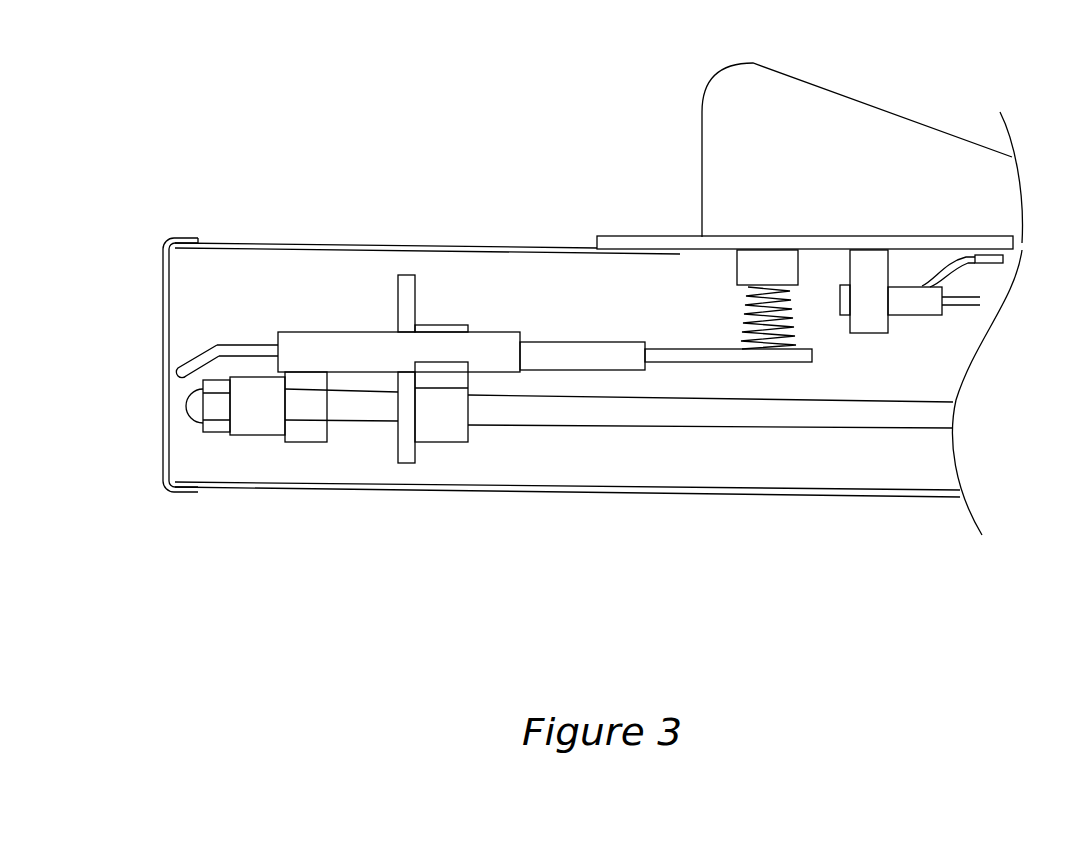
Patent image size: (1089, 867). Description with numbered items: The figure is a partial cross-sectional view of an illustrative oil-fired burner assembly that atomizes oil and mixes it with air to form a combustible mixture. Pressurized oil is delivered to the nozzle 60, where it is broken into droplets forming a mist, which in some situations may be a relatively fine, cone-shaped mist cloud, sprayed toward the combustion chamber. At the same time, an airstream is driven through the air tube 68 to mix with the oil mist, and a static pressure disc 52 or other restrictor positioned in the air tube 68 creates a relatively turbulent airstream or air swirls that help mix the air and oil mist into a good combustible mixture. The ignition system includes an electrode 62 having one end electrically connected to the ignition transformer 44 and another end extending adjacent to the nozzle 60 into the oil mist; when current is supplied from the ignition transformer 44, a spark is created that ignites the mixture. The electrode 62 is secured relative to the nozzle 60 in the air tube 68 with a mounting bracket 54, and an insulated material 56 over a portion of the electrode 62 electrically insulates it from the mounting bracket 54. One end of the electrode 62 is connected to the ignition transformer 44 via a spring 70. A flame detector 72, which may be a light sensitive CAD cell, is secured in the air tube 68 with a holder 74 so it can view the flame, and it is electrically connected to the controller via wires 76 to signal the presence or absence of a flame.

The ignition transformer 44 is at (838, 92).
The static pressure disc 52 is at (400, 463).
The mounting bracket 54 is at (441, 433).
The insulated material 56 is at (308, 338).
The nozzle 60 is at (257, 425).
The electrode 62 is at (728, 363).
The air tube 68 is at (600, 490).
The spring 70 is at (748, 313).
The flame detector 72 is at (928, 308).
The holder 74 is at (872, 325).
The wires 76 is at (985, 296).